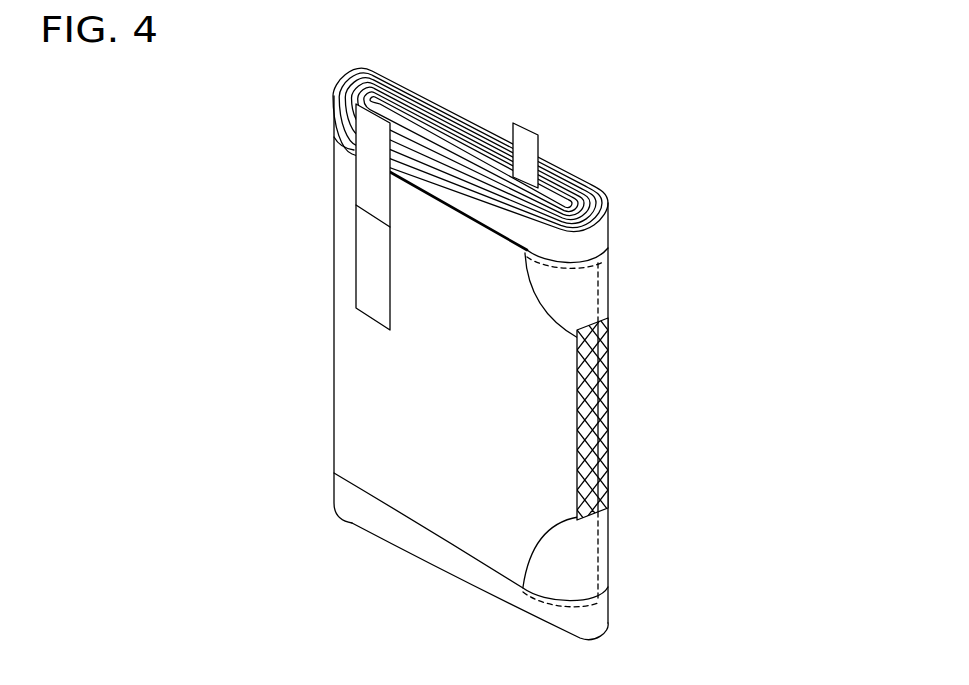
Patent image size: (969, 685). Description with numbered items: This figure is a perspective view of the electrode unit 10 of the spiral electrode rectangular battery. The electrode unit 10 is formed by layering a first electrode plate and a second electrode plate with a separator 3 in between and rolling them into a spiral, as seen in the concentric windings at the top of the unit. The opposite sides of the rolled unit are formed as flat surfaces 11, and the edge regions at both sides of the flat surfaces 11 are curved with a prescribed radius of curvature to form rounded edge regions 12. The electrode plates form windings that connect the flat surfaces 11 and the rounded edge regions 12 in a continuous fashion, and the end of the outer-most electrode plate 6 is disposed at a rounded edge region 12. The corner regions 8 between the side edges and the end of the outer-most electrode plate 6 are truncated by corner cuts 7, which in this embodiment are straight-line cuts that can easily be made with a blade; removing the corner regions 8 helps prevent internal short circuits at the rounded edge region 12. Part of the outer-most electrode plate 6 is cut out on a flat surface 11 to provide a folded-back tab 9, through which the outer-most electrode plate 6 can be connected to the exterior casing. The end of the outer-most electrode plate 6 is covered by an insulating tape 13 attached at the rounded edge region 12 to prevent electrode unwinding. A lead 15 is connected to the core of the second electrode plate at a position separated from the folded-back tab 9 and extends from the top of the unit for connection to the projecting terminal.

The separator 3 is at (460, 203).
The outer-most electrode plate 6 is at (390, 490).
The corner cuts 7 is at (547, 550).
The corner regions 8 is at (610, 262).
The folded-back tab 9 is at (370, 168).
The electrode unit 10 is at (298, 348).
The flat surface 11 is at (478, 98).
The rounded edge region 12 is at (332, 65).
The insulating tape 13 is at (578, 403).
The lead 15 is at (533, 133).